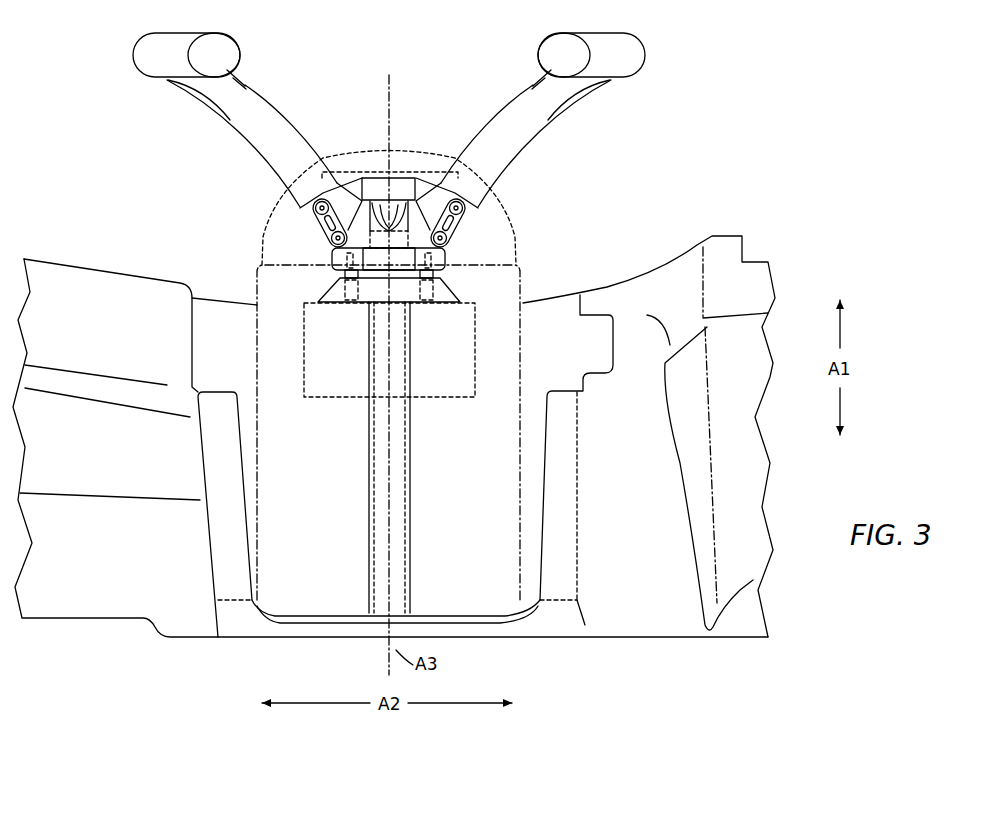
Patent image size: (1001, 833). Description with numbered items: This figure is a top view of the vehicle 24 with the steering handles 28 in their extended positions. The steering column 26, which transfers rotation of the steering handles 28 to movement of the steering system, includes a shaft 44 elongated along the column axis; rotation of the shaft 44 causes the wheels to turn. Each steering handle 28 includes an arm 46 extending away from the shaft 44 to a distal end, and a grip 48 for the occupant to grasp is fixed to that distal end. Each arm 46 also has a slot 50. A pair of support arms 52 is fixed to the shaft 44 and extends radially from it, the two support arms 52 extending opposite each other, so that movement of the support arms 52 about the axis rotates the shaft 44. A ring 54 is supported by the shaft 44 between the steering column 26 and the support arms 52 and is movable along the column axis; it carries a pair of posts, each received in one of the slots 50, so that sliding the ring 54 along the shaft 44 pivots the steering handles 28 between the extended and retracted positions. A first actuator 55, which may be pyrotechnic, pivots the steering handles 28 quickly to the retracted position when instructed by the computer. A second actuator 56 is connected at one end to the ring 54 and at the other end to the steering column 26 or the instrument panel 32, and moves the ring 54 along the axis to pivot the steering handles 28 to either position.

The vehicle 24 is at (53, 170).
The steering column 26 is at (551, 273).
The steering handles 28 is at (272, 97).
The instrument panel 32 is at (641, 503).
The shaft 44 is at (396, 260).
The arm 46 is at (257, 120).
The grip 48 is at (130, 65).
The slot 50 is at (357, 195).
The support arms 52 is at (348, 195).
The ring 54 is at (376, 258).
The first actuator 55 is at (342, 258).
The second actuator 56 is at (436, 258).